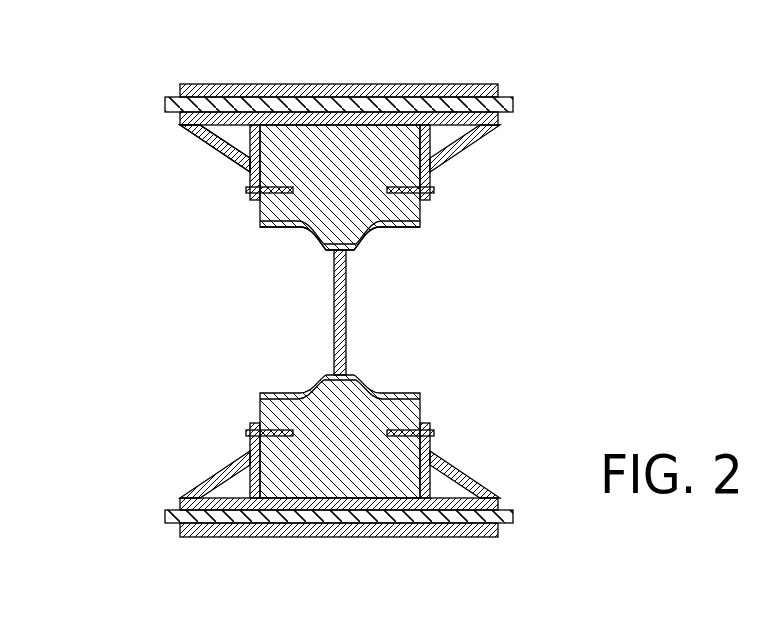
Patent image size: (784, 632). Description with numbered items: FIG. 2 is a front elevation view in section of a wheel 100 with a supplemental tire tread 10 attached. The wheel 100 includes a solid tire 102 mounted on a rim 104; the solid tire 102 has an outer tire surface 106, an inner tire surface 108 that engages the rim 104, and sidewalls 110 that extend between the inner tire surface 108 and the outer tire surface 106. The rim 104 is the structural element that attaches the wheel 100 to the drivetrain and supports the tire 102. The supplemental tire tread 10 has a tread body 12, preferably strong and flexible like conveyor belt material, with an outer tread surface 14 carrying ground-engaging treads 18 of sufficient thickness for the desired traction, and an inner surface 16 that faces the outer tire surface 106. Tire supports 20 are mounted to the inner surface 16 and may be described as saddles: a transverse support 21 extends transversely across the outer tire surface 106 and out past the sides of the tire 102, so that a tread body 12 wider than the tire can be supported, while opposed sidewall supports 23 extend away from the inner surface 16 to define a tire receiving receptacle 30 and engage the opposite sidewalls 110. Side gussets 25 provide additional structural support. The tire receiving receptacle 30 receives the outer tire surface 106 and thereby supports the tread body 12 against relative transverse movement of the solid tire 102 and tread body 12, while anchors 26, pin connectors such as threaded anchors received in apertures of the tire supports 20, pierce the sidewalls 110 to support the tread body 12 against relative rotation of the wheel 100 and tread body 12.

The supplemental tire tread 10 is at (500, 92).
The tread body 12 is at (167, 100).
The outer tread surface 14 is at (180, 90).
The inner surface 16 is at (177, 113).
The treads 18 is at (258, 84).
The tire supports 20 is at (167, 510).
The transverse support 21 is at (180, 123).
The sidewall supports 23 is at (320, 160).
The side gussets 25 is at (214, 148).
The anchors 26 is at (247, 435).
The tire receiving receptacle 30 is at (262, 195).
The wheel 100 is at (410, 167).
The solid tire 102 is at (407, 220).
The rim 104 is at (347, 283).
The outer tire surface 106 is at (443, 130).
The inner tire surface 108 is at (303, 250).
The sidewalls 110 is at (252, 497).